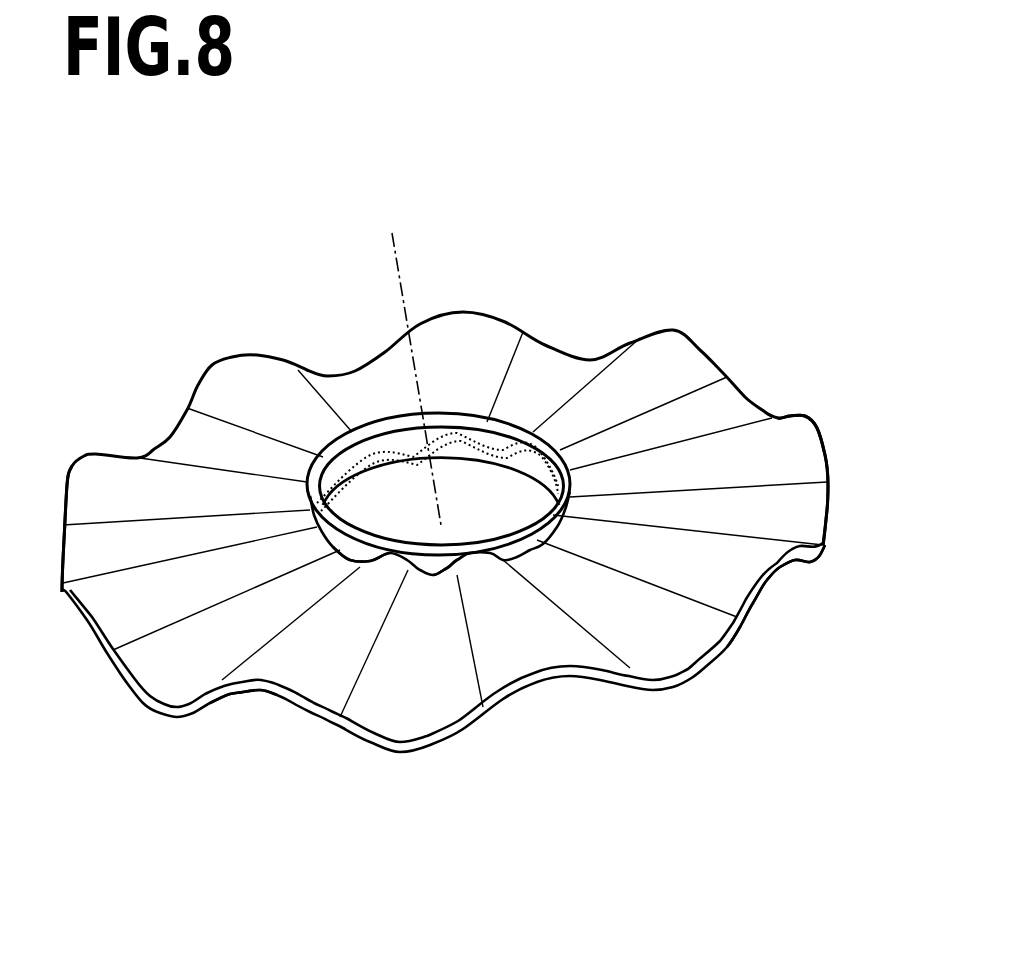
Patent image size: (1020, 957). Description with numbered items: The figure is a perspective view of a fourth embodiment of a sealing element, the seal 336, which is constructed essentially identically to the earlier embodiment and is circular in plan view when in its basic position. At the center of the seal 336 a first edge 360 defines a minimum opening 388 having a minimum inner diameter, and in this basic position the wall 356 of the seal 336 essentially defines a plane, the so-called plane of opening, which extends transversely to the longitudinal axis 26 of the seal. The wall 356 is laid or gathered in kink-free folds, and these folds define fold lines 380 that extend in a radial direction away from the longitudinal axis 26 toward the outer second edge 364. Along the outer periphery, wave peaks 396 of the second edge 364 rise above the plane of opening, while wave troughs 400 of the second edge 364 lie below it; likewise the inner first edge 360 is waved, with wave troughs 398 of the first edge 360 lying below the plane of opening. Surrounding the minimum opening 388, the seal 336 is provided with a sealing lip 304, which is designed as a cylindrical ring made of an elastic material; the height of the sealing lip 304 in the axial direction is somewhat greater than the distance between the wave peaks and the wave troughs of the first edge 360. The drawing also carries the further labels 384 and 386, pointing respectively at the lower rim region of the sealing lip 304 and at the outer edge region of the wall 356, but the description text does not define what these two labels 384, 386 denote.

The longitudinal axis 26 is at (397, 250).
The sealing lip 304 is at (470, 417).
The seal 336 is at (445, 362).
The wall 356 is at (659, 348).
The first edge 360 is at (388, 485).
The second edge 364 is at (829, 468).
The fold lines 380 is at (727, 400).
The inner rim 384 is at (365, 510).
The outer edge 386 is at (534, 730).
The minimum opening 388 is at (513, 509).
The wave peaks of the second edge 396 is at (67, 482).
The wave troughs of the first edge 398 is at (457, 560).
The wave troughs of the second edge 400 is at (147, 688).